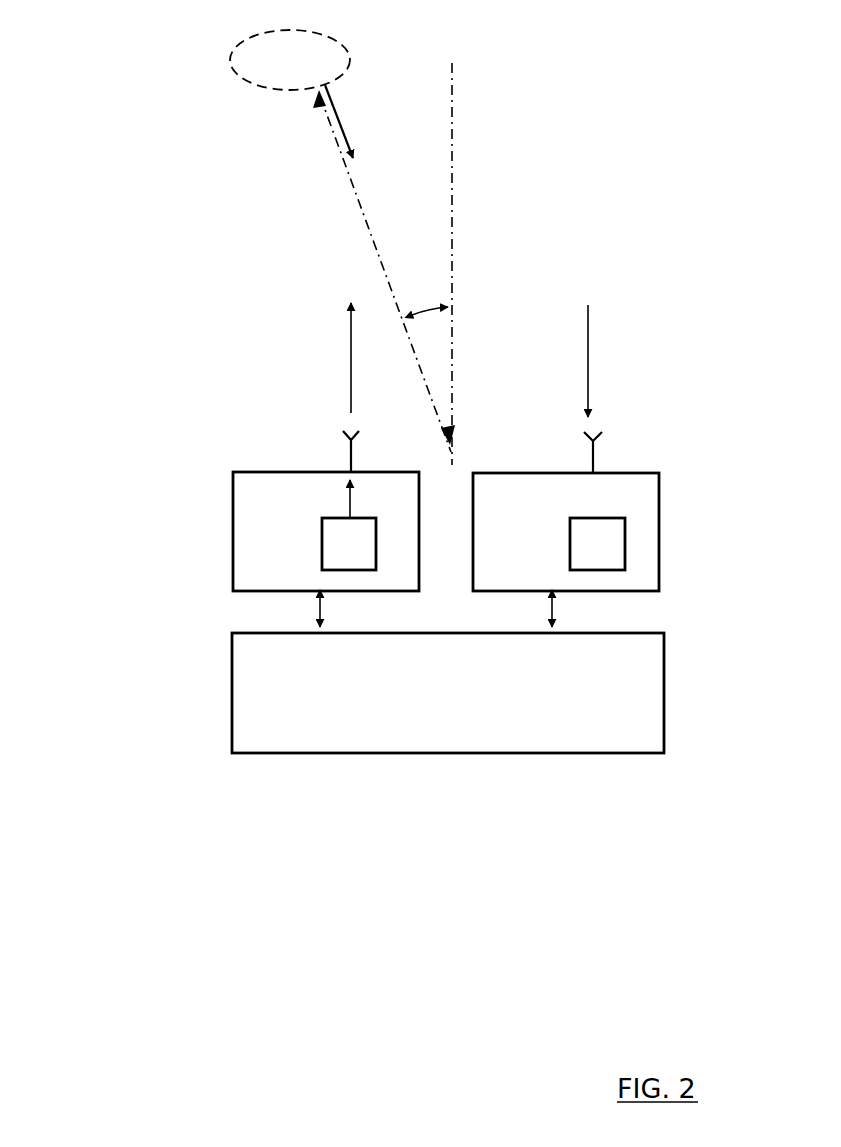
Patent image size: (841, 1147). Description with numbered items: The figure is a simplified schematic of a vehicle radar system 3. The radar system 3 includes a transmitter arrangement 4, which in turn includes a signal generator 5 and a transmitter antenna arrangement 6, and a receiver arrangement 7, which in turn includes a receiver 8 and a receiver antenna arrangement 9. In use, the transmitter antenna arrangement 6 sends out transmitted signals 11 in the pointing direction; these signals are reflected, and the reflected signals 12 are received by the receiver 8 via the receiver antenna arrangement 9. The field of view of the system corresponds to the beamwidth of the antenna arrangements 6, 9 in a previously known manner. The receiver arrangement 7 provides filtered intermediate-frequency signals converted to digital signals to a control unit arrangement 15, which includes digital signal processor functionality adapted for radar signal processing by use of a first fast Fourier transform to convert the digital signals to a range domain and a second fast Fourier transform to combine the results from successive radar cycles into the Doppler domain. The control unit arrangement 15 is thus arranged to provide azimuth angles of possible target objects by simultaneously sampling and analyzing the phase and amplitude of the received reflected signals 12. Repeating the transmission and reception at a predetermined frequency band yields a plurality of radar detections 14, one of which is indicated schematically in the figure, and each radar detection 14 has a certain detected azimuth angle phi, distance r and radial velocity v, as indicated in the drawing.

The radar system 3 is at (525, 226).
The transmitter arrangement 4 is at (278, 553).
The signal generator 5 is at (350, 553).
The transmitter antenna arrangement 6 is at (350, 452).
The receiver arrangement 7 is at (518, 553).
The receiver 8 is at (598, 553).
The receiver antenna arrangement 9 is at (595, 462).
The transmitted signals 11 is at (351, 385).
The reflected signals 12 is at (588, 343).
The radar detections 14 is at (236, 48).
The control unit arrangement 15 is at (470, 693).
The radial velocity v is at (341, 122).
The distance r is at (365, 221).
The azimuth angle phi is at (430, 296).